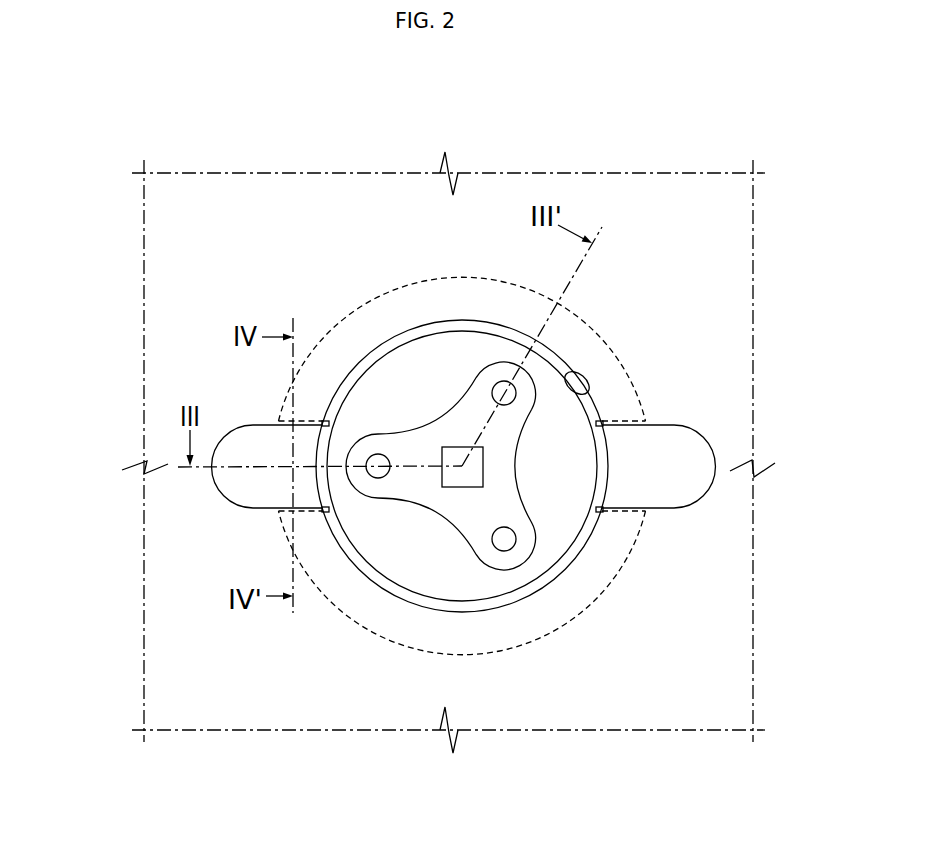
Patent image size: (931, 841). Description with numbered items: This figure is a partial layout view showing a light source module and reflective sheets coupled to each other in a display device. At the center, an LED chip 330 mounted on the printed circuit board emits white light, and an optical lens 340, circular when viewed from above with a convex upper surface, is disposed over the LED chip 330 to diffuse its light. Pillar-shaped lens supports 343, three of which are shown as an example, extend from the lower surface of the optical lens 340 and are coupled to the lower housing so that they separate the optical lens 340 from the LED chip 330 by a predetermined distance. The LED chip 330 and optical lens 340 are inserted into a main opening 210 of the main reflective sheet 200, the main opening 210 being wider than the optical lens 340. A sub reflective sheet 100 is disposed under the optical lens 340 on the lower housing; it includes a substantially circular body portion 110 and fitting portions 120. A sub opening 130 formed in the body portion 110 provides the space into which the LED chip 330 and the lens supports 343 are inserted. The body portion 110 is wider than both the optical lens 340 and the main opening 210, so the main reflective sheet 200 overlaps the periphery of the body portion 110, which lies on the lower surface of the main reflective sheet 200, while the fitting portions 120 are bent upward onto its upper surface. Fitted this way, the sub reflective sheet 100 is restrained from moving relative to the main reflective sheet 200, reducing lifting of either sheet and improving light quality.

The sub reflective sheet 100 is at (412, 260).
The body portion 110 is at (505, 655).
The fitting portion 120 is at (256, 481).
The sub opening 130 is at (427, 510).
The main reflective sheet 200 is at (236, 387).
The main opening 210 is at (590, 393).
The LED chip 330 is at (465, 487).
The optical lens 340 is at (566, 367).
The lens support 343 is at (513, 547).